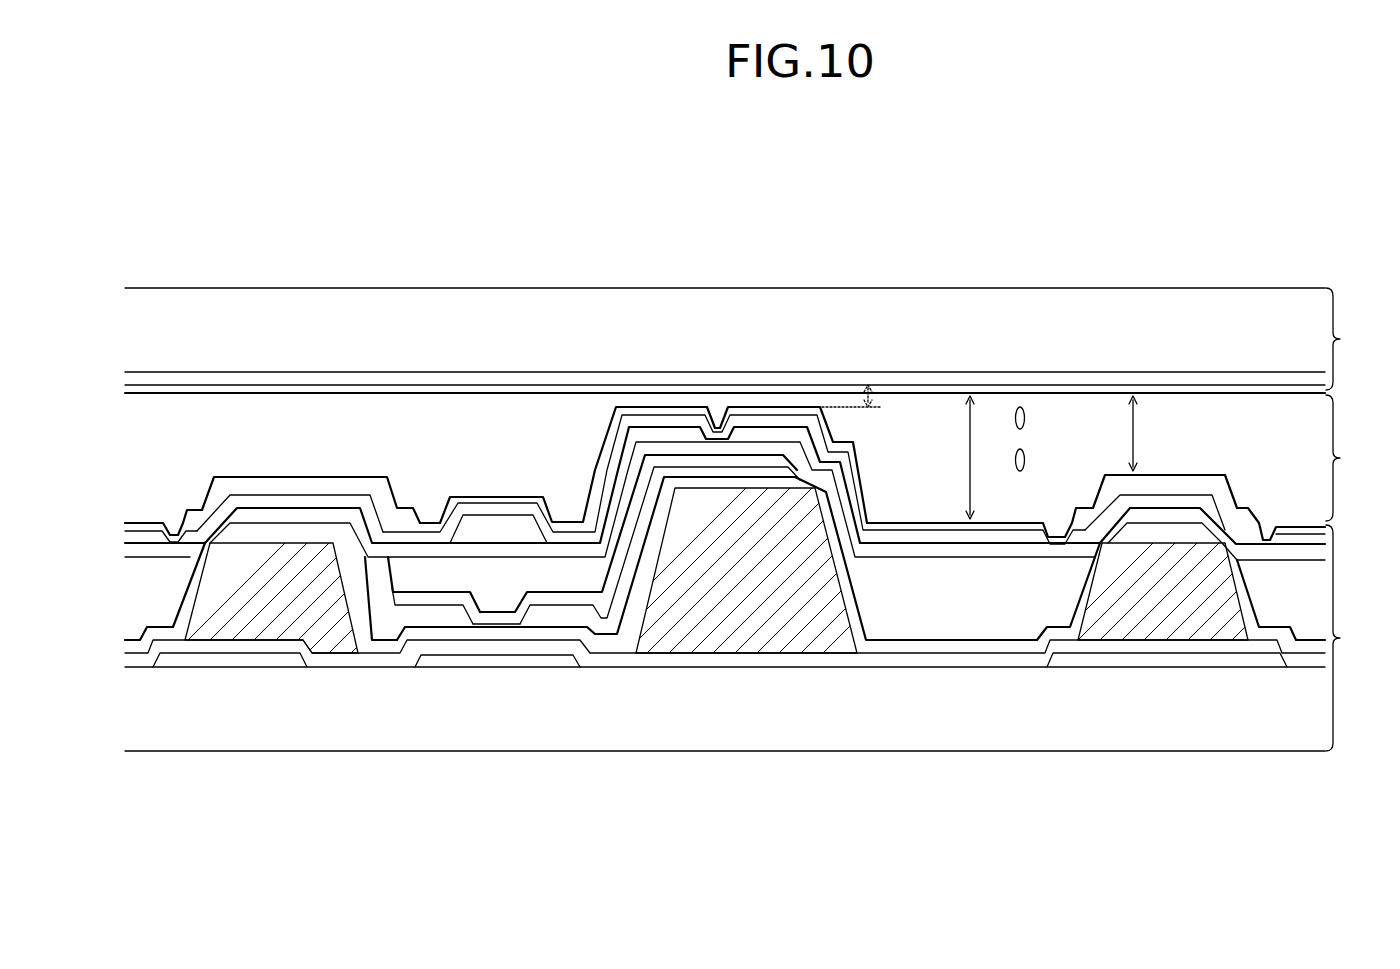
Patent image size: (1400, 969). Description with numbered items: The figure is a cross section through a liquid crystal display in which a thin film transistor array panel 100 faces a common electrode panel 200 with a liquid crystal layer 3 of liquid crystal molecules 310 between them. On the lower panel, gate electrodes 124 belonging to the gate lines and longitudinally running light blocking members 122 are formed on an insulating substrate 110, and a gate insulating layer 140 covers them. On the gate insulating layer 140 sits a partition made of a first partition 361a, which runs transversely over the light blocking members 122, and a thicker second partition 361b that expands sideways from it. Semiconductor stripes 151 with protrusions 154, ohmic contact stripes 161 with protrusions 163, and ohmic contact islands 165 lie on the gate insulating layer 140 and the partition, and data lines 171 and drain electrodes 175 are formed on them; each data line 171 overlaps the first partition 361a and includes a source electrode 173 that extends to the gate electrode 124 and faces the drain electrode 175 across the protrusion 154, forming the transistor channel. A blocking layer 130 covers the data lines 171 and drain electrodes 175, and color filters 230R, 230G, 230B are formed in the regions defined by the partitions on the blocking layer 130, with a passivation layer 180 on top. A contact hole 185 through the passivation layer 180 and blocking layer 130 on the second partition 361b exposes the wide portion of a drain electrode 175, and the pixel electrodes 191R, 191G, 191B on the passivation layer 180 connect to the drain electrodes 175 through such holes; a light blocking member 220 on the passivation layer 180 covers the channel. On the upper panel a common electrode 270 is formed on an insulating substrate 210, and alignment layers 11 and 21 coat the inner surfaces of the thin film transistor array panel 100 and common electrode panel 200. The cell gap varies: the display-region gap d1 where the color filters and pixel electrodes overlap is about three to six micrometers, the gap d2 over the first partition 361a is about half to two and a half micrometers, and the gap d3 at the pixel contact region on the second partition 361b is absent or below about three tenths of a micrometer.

The common electrode panel 200 is at (754, 340).
The liquid crystal layer 3 is at (1346, 458).
The thin film transistor array panel 100 is at (1355, 638).
The insulating substrate 210 is at (1049, 320).
The common electrode 270 is at (1165, 382).
The alignment layer 21 is at (1244, 397).
The contact hole 185 is at (716, 422).
The insulating substrate 110 is at (678, 725).
The light blocking member 122 is at (233, 660).
The gate electrode 124 is at (512, 660).
The gate insulating layer 140 is at (838, 655).
The blocking layer 130 is at (157, 600).
The first partition 361a is at (285, 625).
The second partition 361b is at (745, 615).
The source electrode 173 is at (430, 605).
The drain electrode 175 is at (562, 612).
The protrusion of ohmic contact stripe 163 is at (443, 625).
The ohmic contact island 165 is at (543, 627).
The protrusion of semiconductor stripe 154 is at (483, 630).
The semiconductor stripe 151 is at (257, 537).
The ohmic contact stripe 161 is at (272, 525).
The data line 171 is at (292, 502).
The pixel electrode 191R is at (145, 530).
The pixel electrode 191G is at (904, 528).
The pixel electrode 191B is at (1291, 528).
The passivation layer 180 is at (345, 490).
The light blocking member 220 is at (497, 525).
The color filter 230G is at (430, 575).
The color filter 230R is at (183, 590).
The color filter 230B is at (1295, 620).
The alignment layer 11 is at (1185, 476).
The liquid crystal molecule 310 is at (1028, 418).
The cell gap d1 is at (982, 457).
The cell gap d2 is at (1145, 433).
The cell gap d3 is at (859, 405).